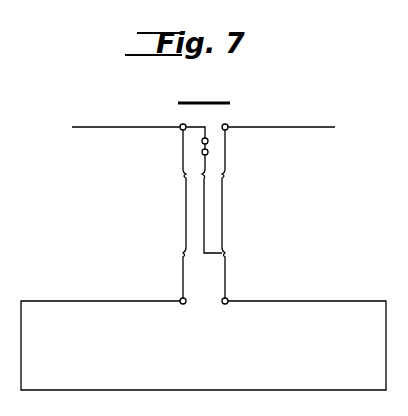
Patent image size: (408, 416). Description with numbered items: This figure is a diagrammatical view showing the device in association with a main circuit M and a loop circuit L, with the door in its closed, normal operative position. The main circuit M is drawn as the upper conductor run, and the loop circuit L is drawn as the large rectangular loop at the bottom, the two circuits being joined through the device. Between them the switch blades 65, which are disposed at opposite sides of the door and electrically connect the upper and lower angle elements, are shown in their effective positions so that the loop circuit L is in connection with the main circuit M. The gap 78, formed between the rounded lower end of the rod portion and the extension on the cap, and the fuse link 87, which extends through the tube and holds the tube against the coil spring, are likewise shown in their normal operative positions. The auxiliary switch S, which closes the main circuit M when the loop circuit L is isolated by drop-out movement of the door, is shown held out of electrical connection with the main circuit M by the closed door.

The auxiliary switch S is at (202, 99).
The main circuit M is at (128, 127).
The switch blades 65 is at (186, 219).
The gap 78 is at (208, 152).
The fuse link 87 is at (206, 203).
The loop circuit L is at (188, 390).